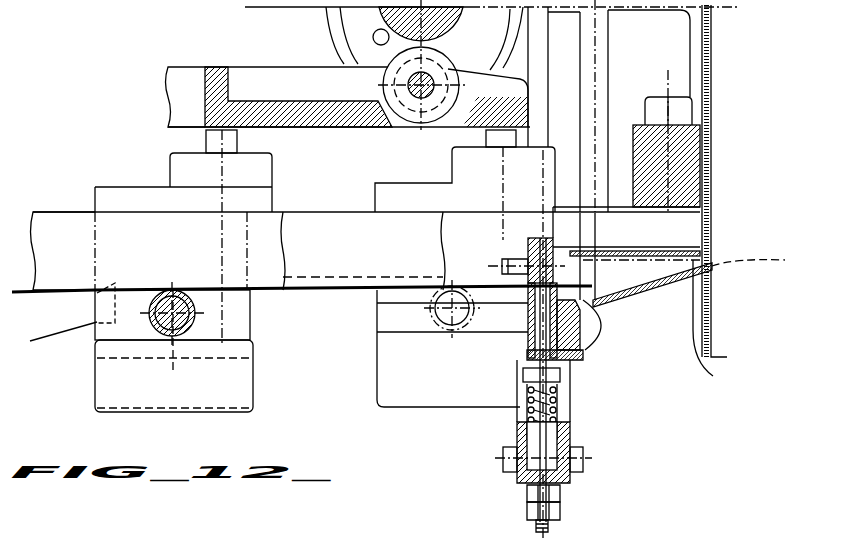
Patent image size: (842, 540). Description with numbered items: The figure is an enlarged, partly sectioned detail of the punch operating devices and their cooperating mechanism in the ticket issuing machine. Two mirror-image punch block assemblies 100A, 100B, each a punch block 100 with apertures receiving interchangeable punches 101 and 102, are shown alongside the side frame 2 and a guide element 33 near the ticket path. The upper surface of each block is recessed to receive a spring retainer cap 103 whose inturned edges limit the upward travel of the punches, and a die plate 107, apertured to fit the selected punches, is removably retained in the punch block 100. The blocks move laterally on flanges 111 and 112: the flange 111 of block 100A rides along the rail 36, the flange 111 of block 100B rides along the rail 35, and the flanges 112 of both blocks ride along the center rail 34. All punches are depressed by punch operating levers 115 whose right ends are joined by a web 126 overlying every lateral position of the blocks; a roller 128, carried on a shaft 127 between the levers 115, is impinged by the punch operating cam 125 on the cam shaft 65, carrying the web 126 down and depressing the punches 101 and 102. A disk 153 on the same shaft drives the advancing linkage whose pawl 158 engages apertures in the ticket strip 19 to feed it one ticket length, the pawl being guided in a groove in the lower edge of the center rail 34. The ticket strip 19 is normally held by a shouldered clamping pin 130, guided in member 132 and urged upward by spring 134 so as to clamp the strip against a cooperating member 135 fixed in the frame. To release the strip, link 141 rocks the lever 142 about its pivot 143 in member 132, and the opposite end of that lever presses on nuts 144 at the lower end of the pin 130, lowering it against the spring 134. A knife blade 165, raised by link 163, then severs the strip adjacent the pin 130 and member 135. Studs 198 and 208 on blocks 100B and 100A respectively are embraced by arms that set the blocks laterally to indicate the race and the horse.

The side frame 2 is at (698, 42).
The ticket strip 19 is at (746, 266).
The guide strip 33 is at (648, 296).
The center rail 34 is at (316, 224).
The rail 35 is at (700, 218).
The rail 36 is at (45, 223).
The cam shaft 65 is at (448, 22).
The punch block 100 is at (248, 307).
The punch block assembly 100A is at (286, 153).
The punch block assembly 100B is at (461, 154).
The punch 101 is at (216, 147).
The punch 102 is at (493, 150).
The spring retainer cap 103 is at (273, 166).
The die plate 107 is at (378, 303).
The flange 111 is at (193, 213).
The flange 112 is at (434, 212).
The punch operating lever 115 is at (178, 82).
The punch operating cam 125 is at (373, 39).
The web 126 is at (286, 104).
The shaft 127 is at (408, 85).
The roller 128 is at (443, 66).
The clamping pin 130 is at (548, 392).
The member 132 is at (562, 444).
The spring 134 is at (557, 410).
The cooperating member 135 is at (551, 243).
The link 141 is at (544, 42).
The lever 142 is at (562, 487).
The pivot 143 is at (583, 458).
The nuts 144 is at (560, 517).
The disk 153 is at (336, 14).
The pawl 158 is at (54, 328).
The link 163 is at (597, 42).
The knife blade 165 is at (572, 345).
The stud 198 is at (462, 313).
The stud 208 is at (187, 321).